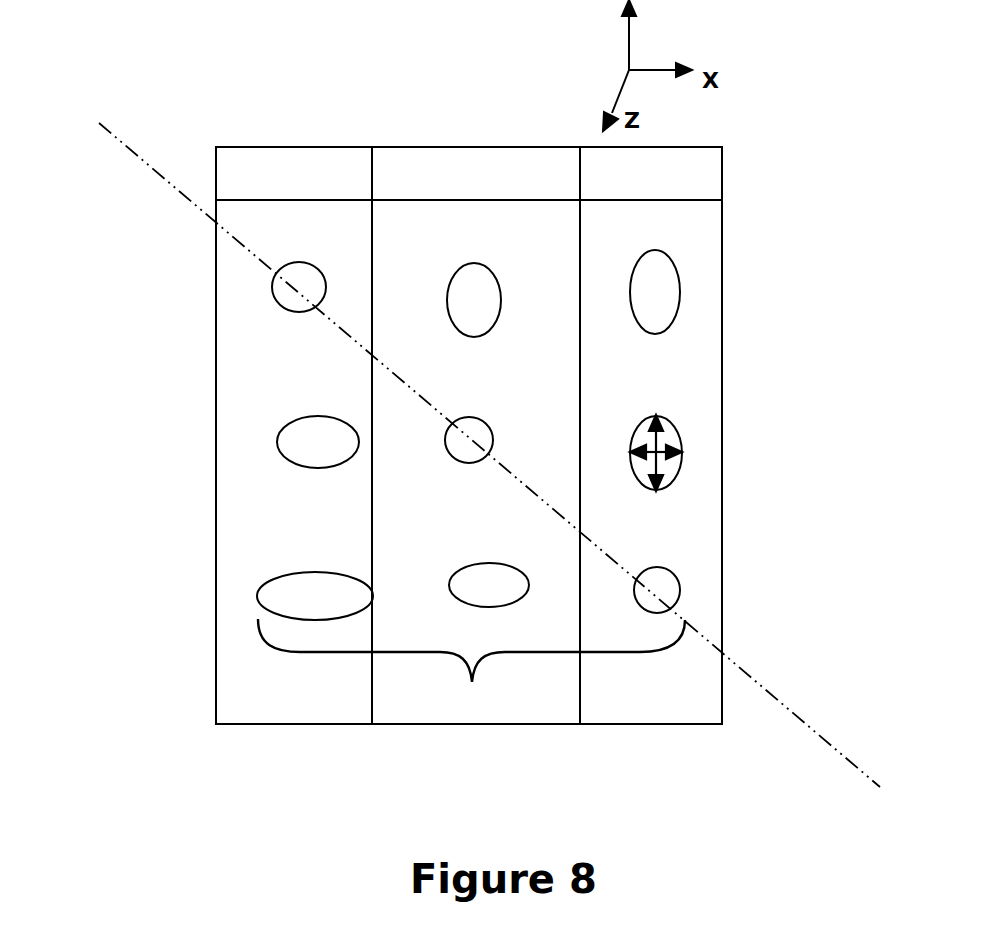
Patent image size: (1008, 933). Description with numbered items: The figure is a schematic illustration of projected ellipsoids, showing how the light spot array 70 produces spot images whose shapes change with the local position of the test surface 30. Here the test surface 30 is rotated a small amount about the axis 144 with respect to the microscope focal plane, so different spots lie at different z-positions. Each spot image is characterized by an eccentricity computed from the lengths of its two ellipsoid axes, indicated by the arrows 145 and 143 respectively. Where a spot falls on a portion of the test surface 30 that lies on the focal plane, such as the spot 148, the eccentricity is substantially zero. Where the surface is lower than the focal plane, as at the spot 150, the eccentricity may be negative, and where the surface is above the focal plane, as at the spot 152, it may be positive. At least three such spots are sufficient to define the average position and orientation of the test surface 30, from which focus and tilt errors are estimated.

The test surface 30 is at (257, 530).
The light spot array 70 is at (472, 682).
The arrow ly 143 is at (662, 428).
The axis 144 is at (177, 188).
The arrow lx 145 is at (682, 452).
The spot 148 is at (683, 579).
The spot 150 is at (682, 288).
The spot 152 is at (257, 595).